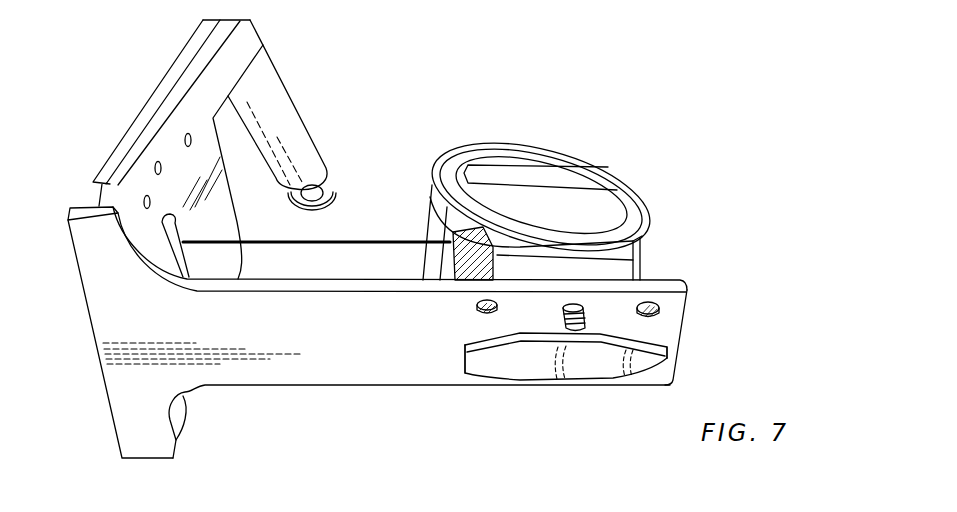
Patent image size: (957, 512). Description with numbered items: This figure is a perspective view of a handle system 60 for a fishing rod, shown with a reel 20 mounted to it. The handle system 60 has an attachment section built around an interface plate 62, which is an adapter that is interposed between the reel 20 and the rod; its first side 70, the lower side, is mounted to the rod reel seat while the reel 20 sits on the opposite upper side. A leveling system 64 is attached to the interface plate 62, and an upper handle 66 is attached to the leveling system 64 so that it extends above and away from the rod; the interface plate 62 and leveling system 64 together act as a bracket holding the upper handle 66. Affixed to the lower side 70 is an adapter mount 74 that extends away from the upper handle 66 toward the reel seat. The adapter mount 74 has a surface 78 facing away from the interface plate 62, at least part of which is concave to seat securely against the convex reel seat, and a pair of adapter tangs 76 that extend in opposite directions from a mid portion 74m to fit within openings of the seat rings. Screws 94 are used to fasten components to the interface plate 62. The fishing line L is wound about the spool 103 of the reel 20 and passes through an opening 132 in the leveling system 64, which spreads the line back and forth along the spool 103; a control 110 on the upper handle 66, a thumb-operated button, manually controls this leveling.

The reel 20 is at (578, 158).
The handle system 60 is at (421, 84).
The interface plate 62 is at (313, 280).
The leveling system 64 is at (203, 153).
The upper handle 66 is at (296, 88).
The first side 70 is at (291, 337).
The adapter mount 74 is at (498, 377).
The mid portion 74m is at (572, 362).
The adapter tangs 76 is at (467, 360).
The surface 78 is at (528, 360).
The screws 94 is at (477, 308).
The spool 103 is at (483, 248).
The control 110 is at (338, 189).
The opening 132 is at (157, 147).
The fishing line L is at (303, 242).